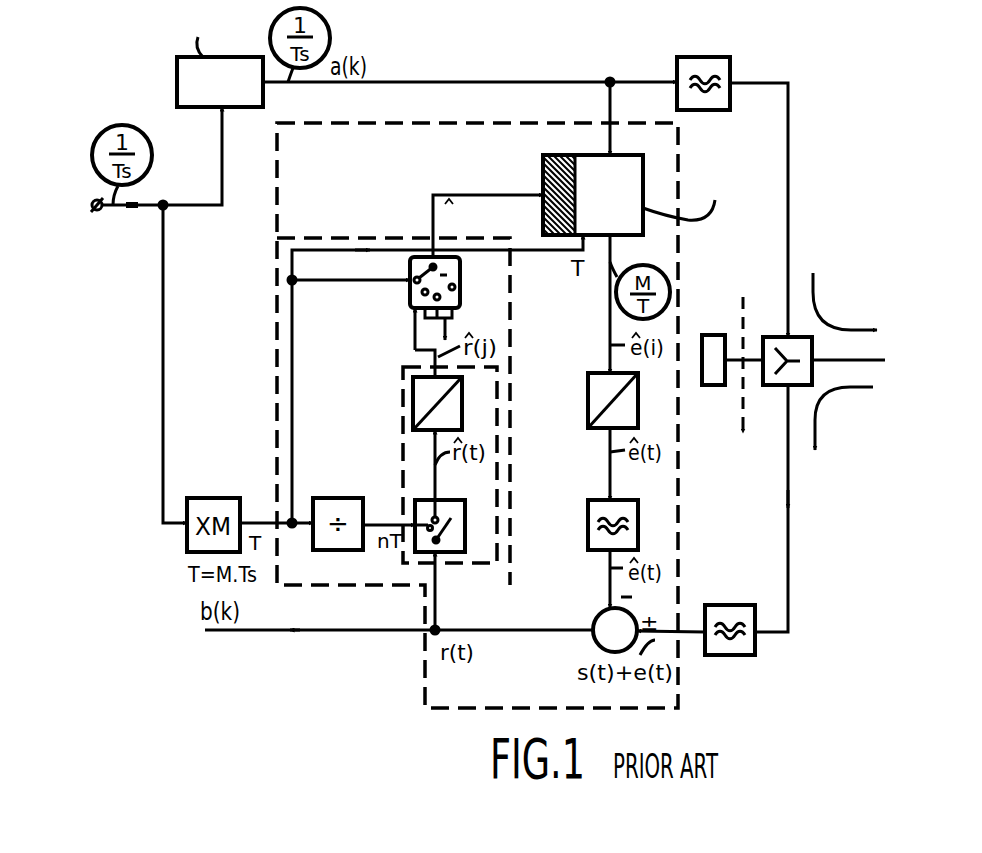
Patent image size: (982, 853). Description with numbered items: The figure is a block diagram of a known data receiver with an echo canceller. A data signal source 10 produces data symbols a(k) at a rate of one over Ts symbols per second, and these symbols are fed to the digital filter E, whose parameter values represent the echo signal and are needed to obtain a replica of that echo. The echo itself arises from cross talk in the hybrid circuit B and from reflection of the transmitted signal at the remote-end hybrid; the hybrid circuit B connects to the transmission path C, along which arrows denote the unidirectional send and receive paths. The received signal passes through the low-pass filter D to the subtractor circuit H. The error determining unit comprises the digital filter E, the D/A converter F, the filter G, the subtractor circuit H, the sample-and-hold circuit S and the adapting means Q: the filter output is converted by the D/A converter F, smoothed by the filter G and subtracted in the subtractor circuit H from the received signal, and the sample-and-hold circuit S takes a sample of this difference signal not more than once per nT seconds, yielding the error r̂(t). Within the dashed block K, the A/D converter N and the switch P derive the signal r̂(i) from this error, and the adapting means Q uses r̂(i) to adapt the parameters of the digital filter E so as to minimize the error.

The data signal source 10 is at (177, 82).
The digital filter E is at (643, 185).
The adapting means Q is at (502, 194).
The switch P is at (462, 297).
The A/D converter N is at (462, 390).
The reconstruction circuit block K is at (510, 527).
The sample-and-hold circuit S is at (465, 527).
The D/A converter F is at (638, 395).
The filter G is at (638, 510).
The subtractor circuit H is at (598, 643).
The low-pass filter D is at (755, 617).
The hybrid circuit B is at (778, 337).
The transmission path C is at (860, 362).